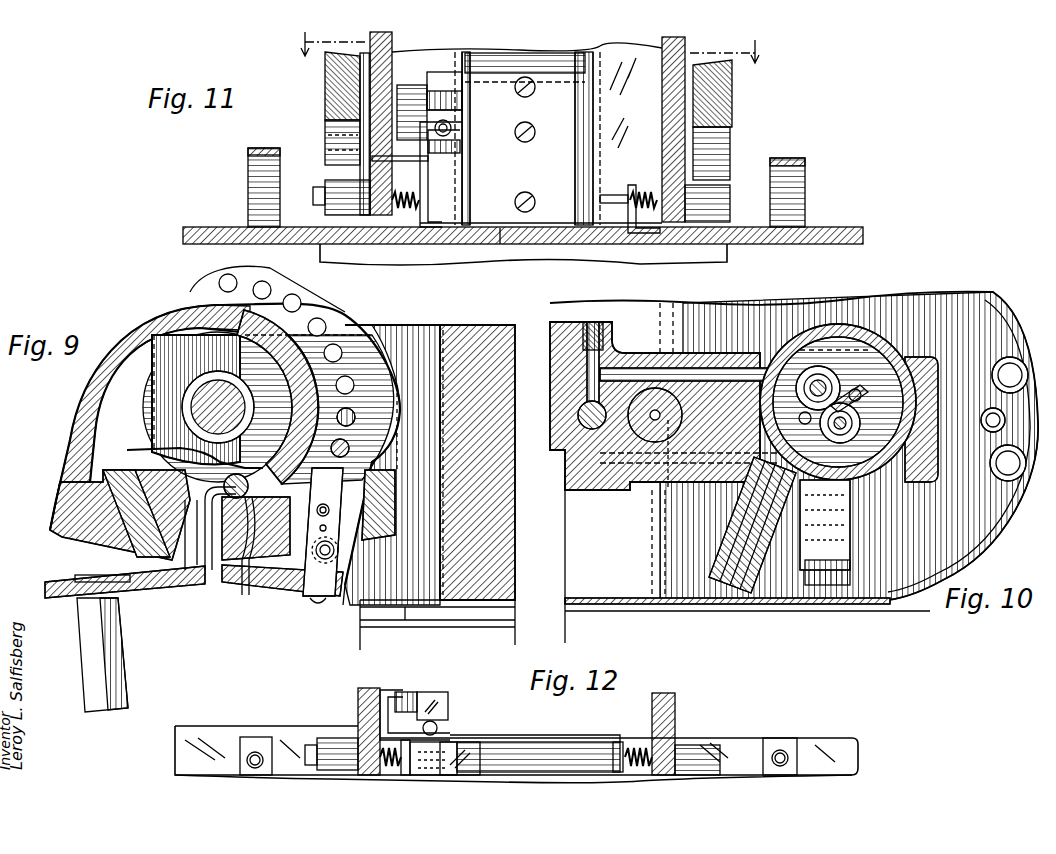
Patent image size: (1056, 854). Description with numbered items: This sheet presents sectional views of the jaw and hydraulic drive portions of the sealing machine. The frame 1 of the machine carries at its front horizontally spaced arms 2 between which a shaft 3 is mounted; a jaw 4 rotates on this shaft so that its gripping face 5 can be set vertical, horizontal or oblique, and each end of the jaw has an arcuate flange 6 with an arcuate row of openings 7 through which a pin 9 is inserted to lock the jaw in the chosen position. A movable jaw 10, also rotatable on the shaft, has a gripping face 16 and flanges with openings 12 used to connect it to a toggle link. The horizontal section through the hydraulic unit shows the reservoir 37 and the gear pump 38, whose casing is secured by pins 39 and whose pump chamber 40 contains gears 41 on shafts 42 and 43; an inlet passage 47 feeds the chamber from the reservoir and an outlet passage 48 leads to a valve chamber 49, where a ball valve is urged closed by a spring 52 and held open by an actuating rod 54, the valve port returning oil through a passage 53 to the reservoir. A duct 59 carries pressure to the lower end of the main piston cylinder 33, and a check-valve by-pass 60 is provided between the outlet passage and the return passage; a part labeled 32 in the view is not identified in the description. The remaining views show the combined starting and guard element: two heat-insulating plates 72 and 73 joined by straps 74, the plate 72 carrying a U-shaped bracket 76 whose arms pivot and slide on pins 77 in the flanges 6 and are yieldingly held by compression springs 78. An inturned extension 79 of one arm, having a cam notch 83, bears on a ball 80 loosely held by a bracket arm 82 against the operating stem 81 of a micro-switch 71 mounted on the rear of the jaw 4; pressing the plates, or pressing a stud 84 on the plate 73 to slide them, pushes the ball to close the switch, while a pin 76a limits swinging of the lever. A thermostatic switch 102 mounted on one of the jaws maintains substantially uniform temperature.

In FIG. 11, the frame 1 is at (325, 143).
In FIG. 9, the frame 1 is at (452, 590).
In FIG. 11, the arms 2 is at (325, 100).
In FIG. 9, the shaft 3 is at (205, 468).
In FIG. 9, the jaw 4 is at (285, 600).
In FIG. 11, the gripping face 5 is at (732, 95).
In FIG. 9, the gripping face 5 is at (240, 590).
In FIG. 11, the arcuate flange 6 is at (375, 150).
In FIG. 12, the arcuate flange 6 is at (368, 688).
In FIG. 9, the openings 7 is at (262, 291).
In FIG. 9, the pin 9 is at (380, 468).
In FIG. 9, the movable jaw 10 is at (62, 530).
In FIG. 11, the openings 12 is at (526, 56).
In FIG. 9, the gripping face 16 is at (318, 312).
In FIG. 10, the main body block 32 is at (648, 484).
In FIG. 10, the main piston cylinder 33 is at (650, 388).
In FIG. 10, the reservoir 37 is at (846, 400).
In FIG. 10, the pump 38 is at (818, 364).
In FIG. 10, the pins 39 is at (905, 335).
In FIG. 10, the pump chamber 40 is at (842, 405).
In FIG. 10, the gears 41 is at (830, 365).
In FIG. 10, the shaft 42 is at (852, 395).
In FIG. 10, the shaft 43 is at (878, 605).
In FIG. 10, the inlet passage 47 is at (892, 300).
In FIG. 10, the outlet passage 48 is at (668, 484).
In FIG. 10, the valve chamber 49 is at (585, 420).
In FIG. 9, the spring 52 is at (330, 348).
In FIG. 10, the passage 53 is at (665, 367).
In FIG. 10, the actuating rod 54 is at (580, 412).
In FIG. 10, the duct 59 is at (690, 370).
In FIG. 10, the by-pass 60 is at (745, 490).
In FIG. 11, the micro-switch 71 is at (447, 72).
In FIG. 9, the micro-switch 71 is at (402, 395).
In FIG. 12, the micro-switch 71 is at (448, 698).
In FIG. 11, the plate section 72 is at (240, 228).
In FIG. 9, the plate section 72 is at (262, 590).
In FIG. 12, the plate section 72 is at (318, 743).
In FIG. 9, the plate section 73 is at (90, 578).
In FIG. 11, the straps 74 is at (268, 148).
In FIG. 9, the straps 74 is at (224, 488).
In FIG. 12, the straps 74 is at (258, 737).
In FIG. 11, the U-shaped bracket 76 is at (505, 246).
In FIG. 9, the U-shaped bracket 76 is at (322, 600).
In FIG. 12, the U-shaped bracket 76 is at (565, 745).
In FIG. 11, the pin 76a is at (440, 165).
In FIG. 9, the pin 76a is at (345, 600).
In FIG. 11, the pins 77 is at (628, 188).
In FIG. 9, the pins 77 is at (308, 600).
In FIG. 12, the pins 77 is at (405, 775).
In FIG. 11, the compression springs 78 is at (402, 244).
In FIG. 12, the compression springs 78 is at (385, 772).
In FIG. 11, the end extension 79 is at (462, 135).
In FIG. 12, the end extension 79 is at (470, 772).
In FIG. 11, the ball 80 is at (460, 122).
In FIG. 12, the ball 80 is at (410, 692).
In FIG. 12, the operating stem 81 is at (438, 726).
In FIG. 11, the bracket arm 82 is at (418, 112).
In FIG. 12, the bracket arm 82 is at (455, 736).
In FIG. 12, the cam notch 83 is at (436, 776).
In FIG. 9, the stud 84 is at (125, 684).
In FIG. 9, the thermostatic switch 102 is at (208, 582).